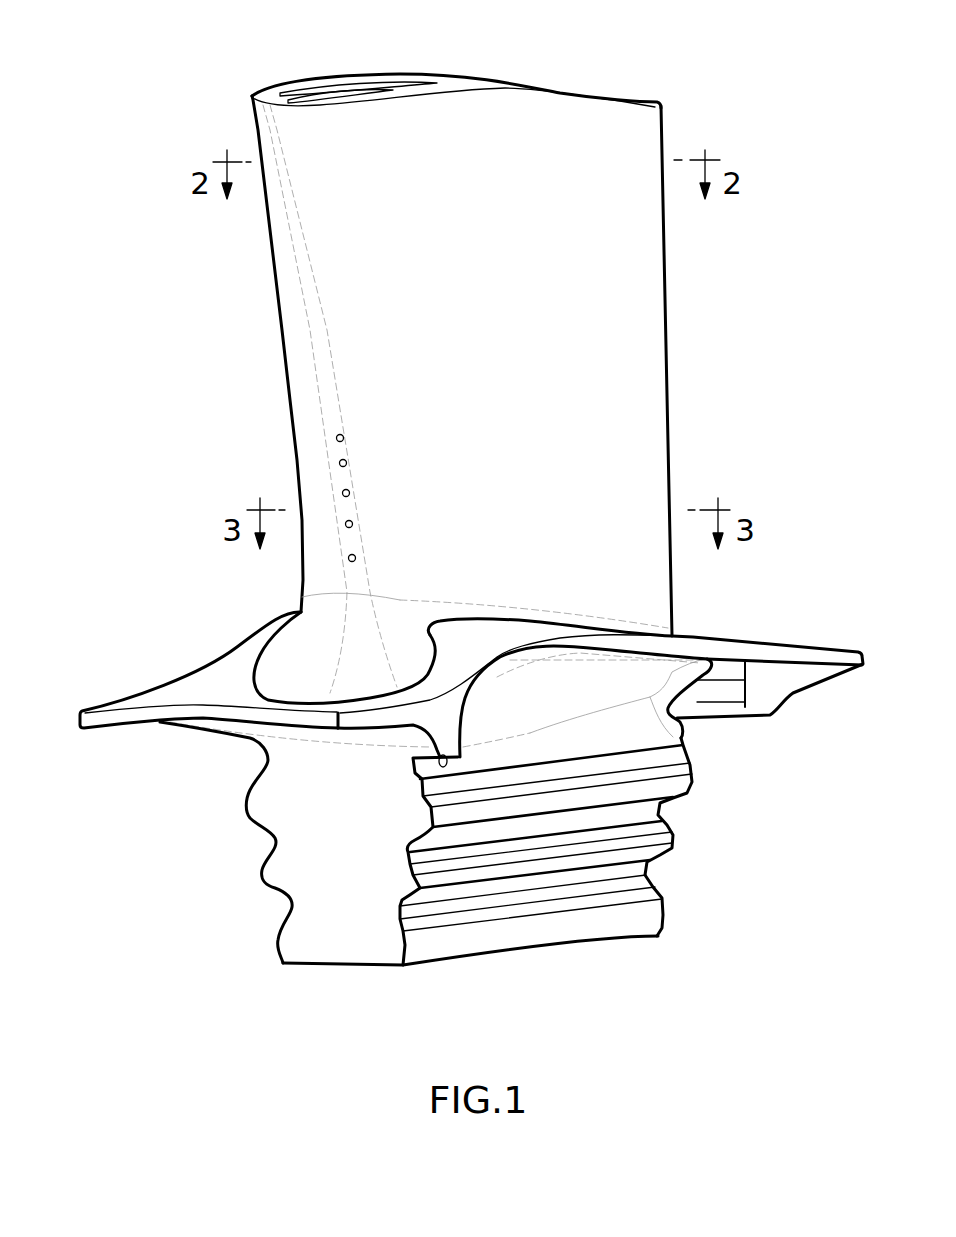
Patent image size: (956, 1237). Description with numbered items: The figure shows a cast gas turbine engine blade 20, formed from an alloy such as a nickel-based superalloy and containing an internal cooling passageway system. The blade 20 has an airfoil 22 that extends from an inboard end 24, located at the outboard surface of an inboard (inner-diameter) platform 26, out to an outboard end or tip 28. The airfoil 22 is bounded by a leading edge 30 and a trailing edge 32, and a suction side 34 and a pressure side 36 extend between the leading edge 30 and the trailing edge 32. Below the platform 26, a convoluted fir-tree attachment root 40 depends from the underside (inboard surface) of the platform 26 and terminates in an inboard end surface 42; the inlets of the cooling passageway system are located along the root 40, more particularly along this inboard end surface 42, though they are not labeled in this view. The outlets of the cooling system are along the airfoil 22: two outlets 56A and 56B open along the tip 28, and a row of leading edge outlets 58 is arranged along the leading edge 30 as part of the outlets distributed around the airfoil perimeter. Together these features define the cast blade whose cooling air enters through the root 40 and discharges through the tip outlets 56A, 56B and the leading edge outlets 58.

The gas turbine engine blade 20 is at (471, 508).
The airfoil 22 is at (478, 347).
The inboard end 24 is at (471, 634).
The inboard platform 26 is at (527, 633).
The tip 28 is at (456, 71).
The leading edge 30 is at (333, 398).
The trailing edge 32 is at (670, 326).
The suction side 34 is at (325, 399).
The pressure side 36 is at (466, 496).
The attachment root 40 is at (426, 868).
The inboard end surface 42 is at (523, 955).
The outlet 56A is at (325, 87).
The outlet 56B is at (358, 98).
The leading edge outlets 58 is at (340, 437).